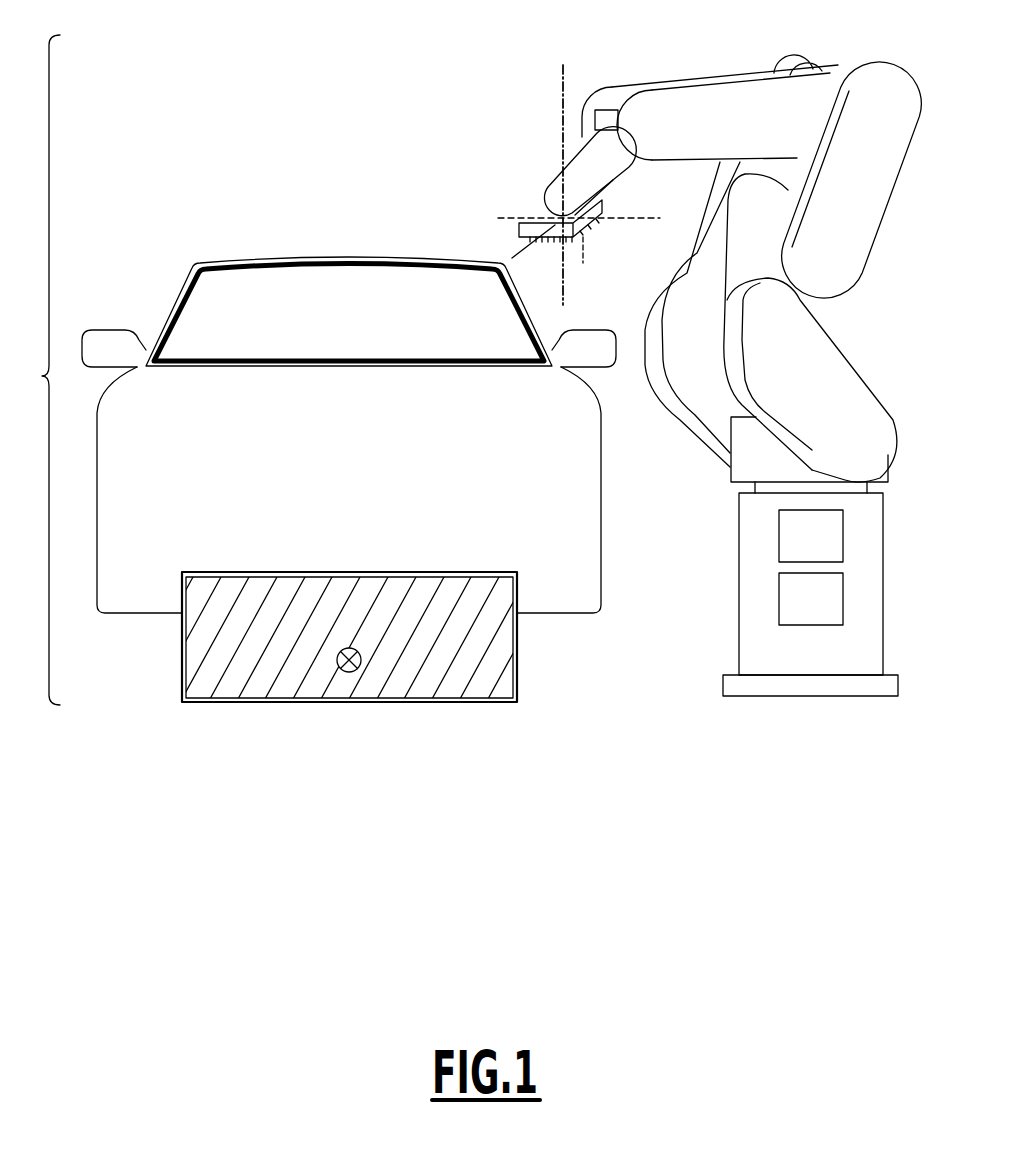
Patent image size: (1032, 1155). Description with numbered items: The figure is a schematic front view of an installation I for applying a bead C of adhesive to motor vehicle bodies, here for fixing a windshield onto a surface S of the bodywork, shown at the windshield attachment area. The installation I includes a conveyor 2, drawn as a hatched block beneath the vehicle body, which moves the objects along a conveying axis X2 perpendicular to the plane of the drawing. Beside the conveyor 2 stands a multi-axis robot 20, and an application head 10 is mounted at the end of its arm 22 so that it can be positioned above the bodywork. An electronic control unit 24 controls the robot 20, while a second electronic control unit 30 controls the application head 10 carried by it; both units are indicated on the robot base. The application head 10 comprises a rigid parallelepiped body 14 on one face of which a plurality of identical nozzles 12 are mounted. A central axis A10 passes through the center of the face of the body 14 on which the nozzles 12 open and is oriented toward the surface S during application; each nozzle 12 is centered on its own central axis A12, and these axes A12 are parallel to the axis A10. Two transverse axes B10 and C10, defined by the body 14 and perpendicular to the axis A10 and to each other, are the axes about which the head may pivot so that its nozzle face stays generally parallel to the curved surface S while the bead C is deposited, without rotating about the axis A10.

The installation I is at (31, 384).
The surface S is at (361, 435).
The bead of adhesive C is at (243, 355).
The conveyor 2 is at (326, 664).
The conveying axis X2 is at (358, 666).
The multi-axis robot 20 is at (665, 355).
The arm 22 is at (703, 118).
The electronic control unit 24 is at (811, 536).
The electronic control unit 30 is at (811, 599).
The application head 10 is at (503, 204).
The rigid parallelepiped body 14 is at (540, 222).
The nozzles 12 is at (527, 237).
The central axis of print head A10 is at (587, 190).
The transverse axis B10 is at (591, 199).
The central axis of a nozzle A12 is at (587, 250).
The transverse axis C10 is at (570, 220).